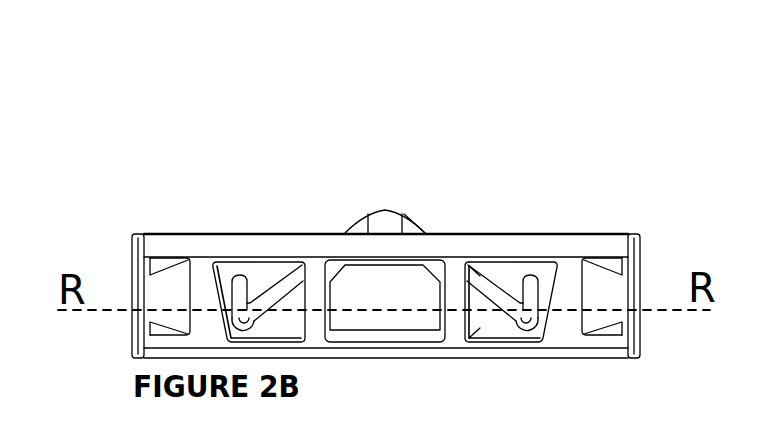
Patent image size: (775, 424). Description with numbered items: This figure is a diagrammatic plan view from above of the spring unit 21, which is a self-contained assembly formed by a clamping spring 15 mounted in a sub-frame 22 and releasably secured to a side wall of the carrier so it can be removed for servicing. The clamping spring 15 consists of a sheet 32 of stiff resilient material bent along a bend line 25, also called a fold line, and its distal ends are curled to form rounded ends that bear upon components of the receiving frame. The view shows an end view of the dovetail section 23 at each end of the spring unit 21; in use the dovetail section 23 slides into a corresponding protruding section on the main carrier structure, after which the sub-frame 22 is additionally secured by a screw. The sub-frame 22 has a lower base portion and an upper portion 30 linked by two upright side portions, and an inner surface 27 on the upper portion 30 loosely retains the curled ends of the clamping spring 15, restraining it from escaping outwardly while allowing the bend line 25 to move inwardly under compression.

The clamping spring 15 is at (402, 203).
The spring unit 21 is at (547, 233).
The sub-frame 22 is at (595, 242).
The dovetail section 23 is at (612, 332).
The bend line 25 is at (380, 210).
The inner surface 27 is at (485, 332).
The upper portion 30 is at (433, 423).
The sheet of stiff resilient material 32 is at (428, 218).